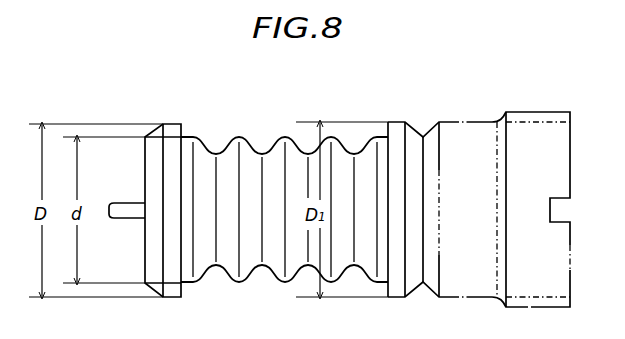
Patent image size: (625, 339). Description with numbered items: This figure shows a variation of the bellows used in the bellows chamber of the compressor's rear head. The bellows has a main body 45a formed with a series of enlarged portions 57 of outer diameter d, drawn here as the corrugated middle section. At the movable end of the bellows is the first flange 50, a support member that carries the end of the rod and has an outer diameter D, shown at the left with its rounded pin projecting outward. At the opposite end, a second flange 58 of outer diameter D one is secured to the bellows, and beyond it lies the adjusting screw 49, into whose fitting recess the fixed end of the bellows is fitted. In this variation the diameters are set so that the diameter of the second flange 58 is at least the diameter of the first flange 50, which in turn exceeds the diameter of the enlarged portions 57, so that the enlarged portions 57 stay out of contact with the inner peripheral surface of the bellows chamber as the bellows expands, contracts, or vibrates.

The flange 50 is at (170, 128).
The enlarged portions 57 is at (203, 138).
The main body 45a is at (248, 167).
The second flange 58 is at (397, 132).
The adjusting screw 49 is at (517, 112).